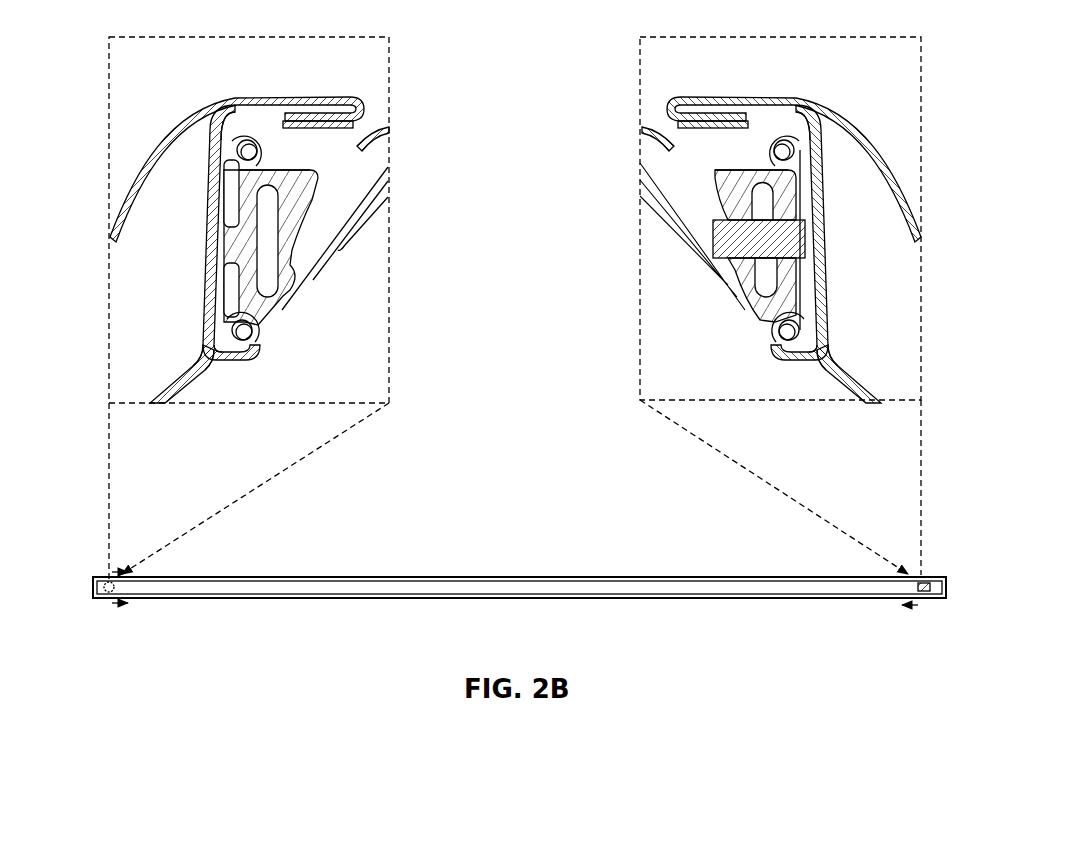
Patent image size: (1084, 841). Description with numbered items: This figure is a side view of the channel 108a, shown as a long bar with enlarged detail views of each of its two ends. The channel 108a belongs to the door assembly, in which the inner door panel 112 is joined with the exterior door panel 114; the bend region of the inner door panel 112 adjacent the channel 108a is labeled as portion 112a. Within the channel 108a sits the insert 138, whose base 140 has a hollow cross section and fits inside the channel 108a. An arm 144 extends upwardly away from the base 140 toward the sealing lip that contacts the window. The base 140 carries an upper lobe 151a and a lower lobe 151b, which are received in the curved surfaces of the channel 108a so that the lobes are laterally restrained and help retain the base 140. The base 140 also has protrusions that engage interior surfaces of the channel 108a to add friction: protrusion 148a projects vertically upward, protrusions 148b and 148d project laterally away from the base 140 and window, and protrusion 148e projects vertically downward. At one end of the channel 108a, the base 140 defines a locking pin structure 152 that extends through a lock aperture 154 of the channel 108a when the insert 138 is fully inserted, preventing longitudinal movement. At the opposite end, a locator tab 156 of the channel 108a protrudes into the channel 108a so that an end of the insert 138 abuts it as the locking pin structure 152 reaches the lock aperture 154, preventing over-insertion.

The channel 108a is at (225, 167).
The inner door panel 112 is at (178, 382).
The bend portion of lower panel 112a is at (202, 362).
The exterior door panel 114 is at (182, 128).
The insert 138 is at (296, 156).
The base 140 is at (287, 237).
The arm 144 is at (342, 208).
The protrusion 148a is at (247, 142).
The protrusion 148b is at (228, 160).
The protrusion 148d is at (230, 318).
The protrusion 148e is at (228, 343).
The upper lobe 151a is at (262, 158).
The lower lobe 151b is at (262, 333).
The locking pin structure 152 is at (230, 205).
The lock aperture 154 is at (228, 235).
The locator tab 156 is at (800, 240).